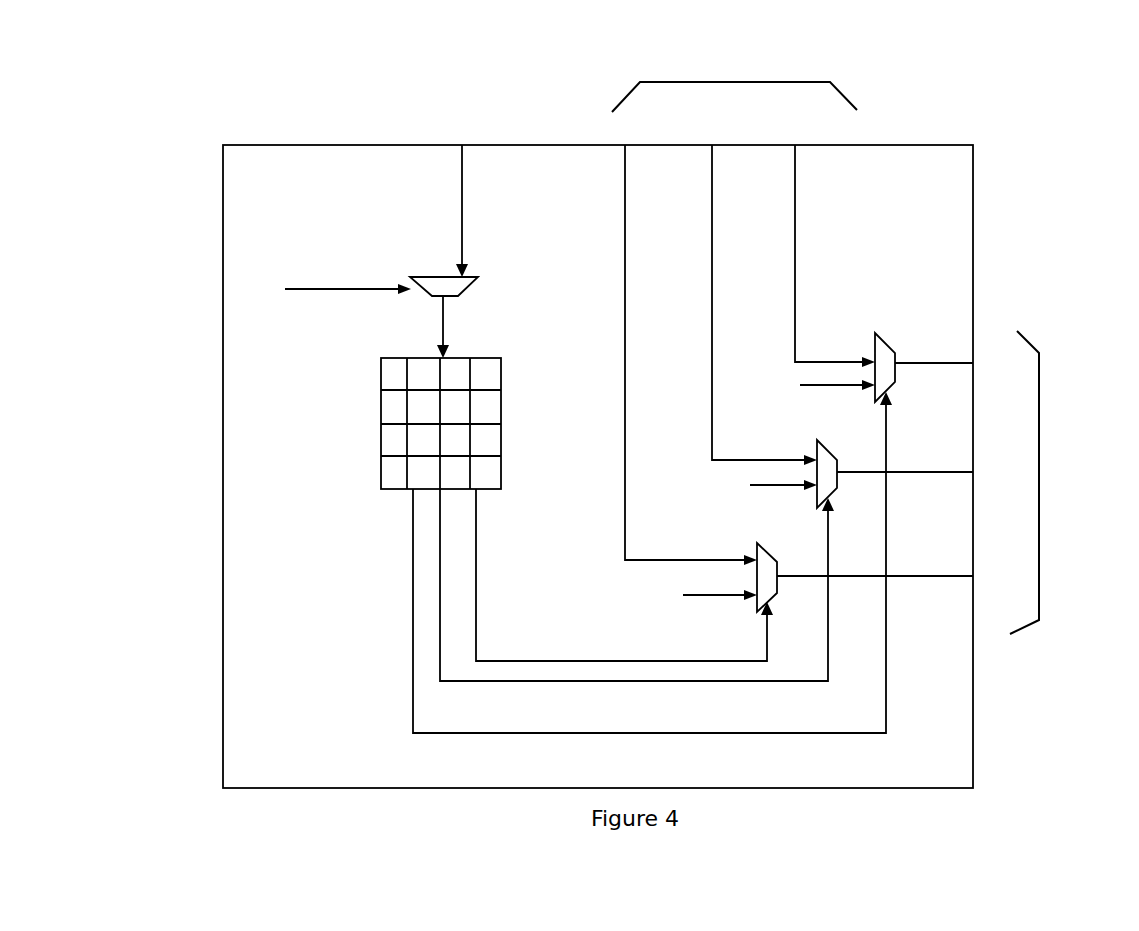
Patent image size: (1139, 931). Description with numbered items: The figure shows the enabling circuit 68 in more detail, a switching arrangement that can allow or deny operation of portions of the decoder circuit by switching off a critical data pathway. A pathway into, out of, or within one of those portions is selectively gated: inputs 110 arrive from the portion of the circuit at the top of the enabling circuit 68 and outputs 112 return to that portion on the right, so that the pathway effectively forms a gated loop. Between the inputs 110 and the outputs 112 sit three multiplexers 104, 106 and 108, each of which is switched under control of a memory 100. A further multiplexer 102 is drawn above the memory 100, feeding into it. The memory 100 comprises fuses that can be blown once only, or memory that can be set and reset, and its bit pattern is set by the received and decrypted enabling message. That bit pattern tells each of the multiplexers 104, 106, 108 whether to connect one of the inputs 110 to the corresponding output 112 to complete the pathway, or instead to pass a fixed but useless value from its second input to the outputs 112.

The enabling circuit 68 is at (212, 573).
The memory 100 is at (368, 431).
The input multiplexer 102 is at (410, 265).
The multiplexer 104 is at (750, 542).
The multiplexer 106 is at (800, 436).
The multiplexer 108 is at (870, 320).
The inputs 110 is at (734, 69).
The outputs 112 is at (1053, 482).